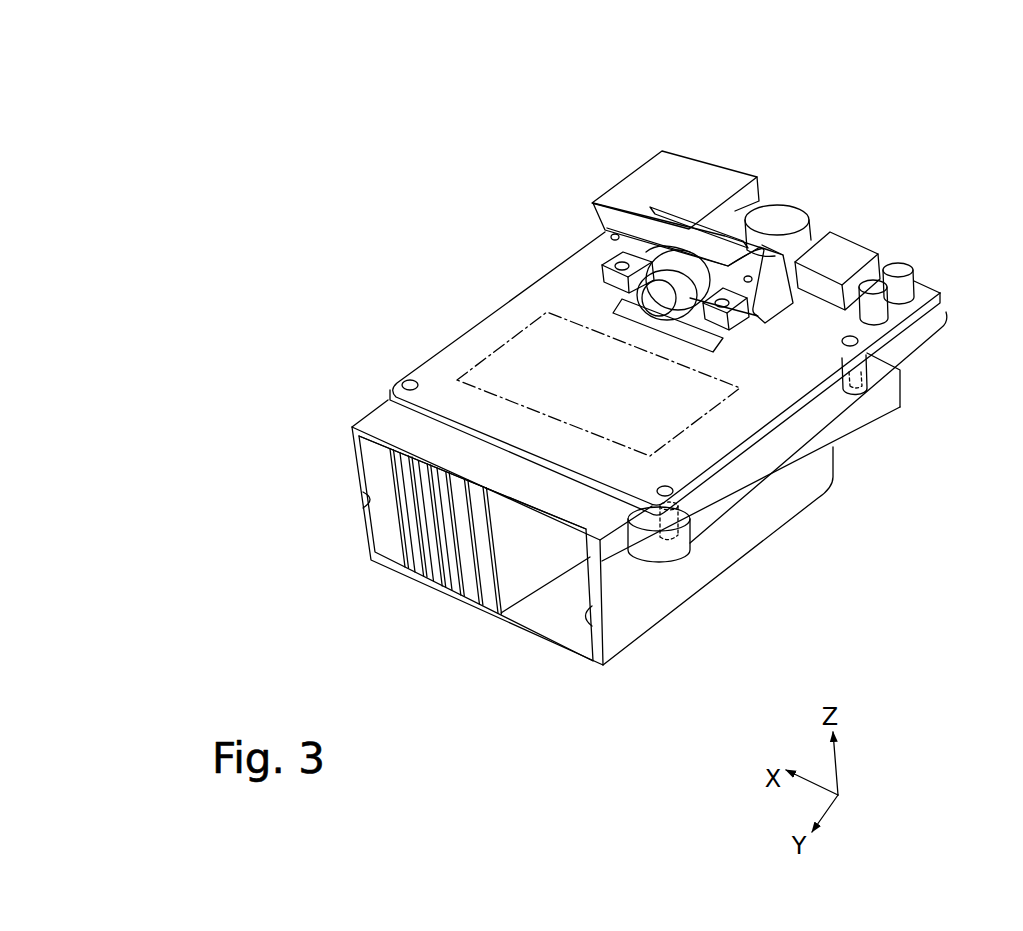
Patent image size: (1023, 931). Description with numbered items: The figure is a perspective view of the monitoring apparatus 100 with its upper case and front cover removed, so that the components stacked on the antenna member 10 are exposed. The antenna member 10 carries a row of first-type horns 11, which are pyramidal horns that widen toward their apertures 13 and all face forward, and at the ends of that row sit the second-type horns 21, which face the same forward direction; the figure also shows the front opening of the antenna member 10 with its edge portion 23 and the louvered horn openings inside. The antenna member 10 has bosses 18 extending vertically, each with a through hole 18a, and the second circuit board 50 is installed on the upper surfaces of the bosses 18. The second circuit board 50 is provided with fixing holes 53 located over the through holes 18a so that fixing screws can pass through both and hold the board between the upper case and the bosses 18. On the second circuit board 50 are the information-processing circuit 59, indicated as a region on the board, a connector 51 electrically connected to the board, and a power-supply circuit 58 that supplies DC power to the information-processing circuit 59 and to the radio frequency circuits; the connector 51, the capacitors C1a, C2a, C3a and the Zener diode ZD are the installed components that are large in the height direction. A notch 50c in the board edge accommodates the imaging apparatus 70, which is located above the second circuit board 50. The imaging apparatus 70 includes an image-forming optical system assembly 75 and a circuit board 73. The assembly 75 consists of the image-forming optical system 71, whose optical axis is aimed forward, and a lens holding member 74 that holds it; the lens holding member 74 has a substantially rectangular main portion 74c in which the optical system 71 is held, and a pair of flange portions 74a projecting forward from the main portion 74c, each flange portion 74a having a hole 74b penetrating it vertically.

The monitoring apparatus 100 is at (758, 132).
The antenna member 10 is at (356, 543).
The first-type horns 11 is at (407, 572).
The aperture 13 is at (406, 536).
The bosses 18 is at (868, 369).
The through hole 18a is at (866, 394).
The second-type horns 21 is at (373, 463).
The flange 23 is at (366, 501).
The second circuit board 50 is at (925, 276).
The notch 50c is at (616, 308).
The connector 51 is at (671, 172).
The fixing holes 53 is at (406, 380).
The power-supply circuit 58 is at (804, 203).
The information-processing circuit 59 is at (467, 357).
The imaging apparatus 70 is at (648, 283).
The image-forming optical system 71 is at (632, 212).
The circuit board 73 is at (644, 206).
The lens holding member 74 is at (628, 224).
The flange portions 74a is at (608, 286).
The hole 74b is at (603, 267).
The main portion 74c is at (778, 284).
The image-forming optical system assembly 75 is at (487, 178).
The capacitor C1a is at (782, 206).
The capacitor C2a is at (899, 265).
The capacitor C3a is at (874, 282).
The Zener diode ZD is at (843, 249).